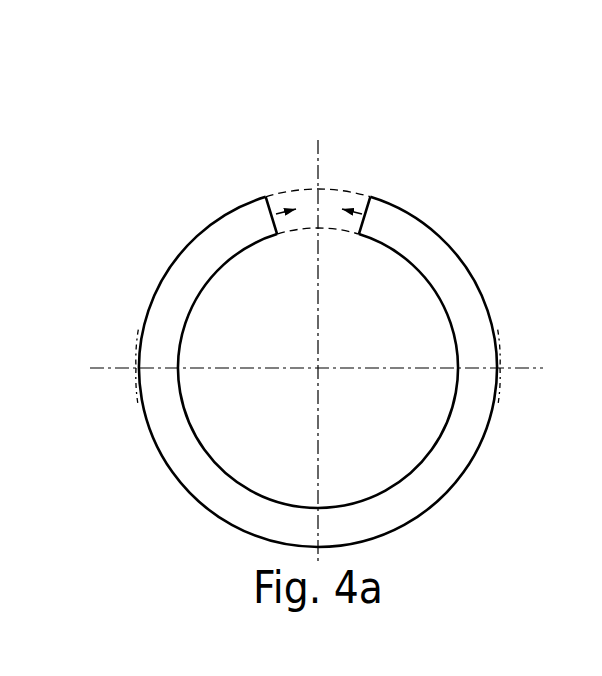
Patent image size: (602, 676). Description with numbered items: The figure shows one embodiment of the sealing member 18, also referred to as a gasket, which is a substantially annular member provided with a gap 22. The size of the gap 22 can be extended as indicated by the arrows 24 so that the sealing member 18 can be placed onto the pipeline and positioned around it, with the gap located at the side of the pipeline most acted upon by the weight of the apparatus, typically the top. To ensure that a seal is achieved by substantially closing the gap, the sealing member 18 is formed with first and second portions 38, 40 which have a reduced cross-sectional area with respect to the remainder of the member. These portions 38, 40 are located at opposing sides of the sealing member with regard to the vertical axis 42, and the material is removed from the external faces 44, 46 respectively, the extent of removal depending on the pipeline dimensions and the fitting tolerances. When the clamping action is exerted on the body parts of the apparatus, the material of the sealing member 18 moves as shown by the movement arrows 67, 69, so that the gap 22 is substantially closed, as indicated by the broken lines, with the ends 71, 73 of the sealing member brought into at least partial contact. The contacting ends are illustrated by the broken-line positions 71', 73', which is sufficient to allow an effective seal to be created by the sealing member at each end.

The sealing member 18 is at (473, 275).
The gap 22 is at (348, 207).
The arrows 24 is at (252, 178).
The first portion 38 is at (135, 371).
The second portion 40 is at (502, 372).
The vertical axis 42 is at (313, 134).
The external face 44 is at (135, 363).
The external face 46 is at (502, 363).
The movement arrow 67 is at (292, 207).
The movement arrow 69 is at (370, 191).
The end of sealing member 71 is at (233, 151).
The contacting end 71' is at (293, 138).
The end of sealing member 73 is at (414, 173).
The contacting end 73' is at (339, 138).